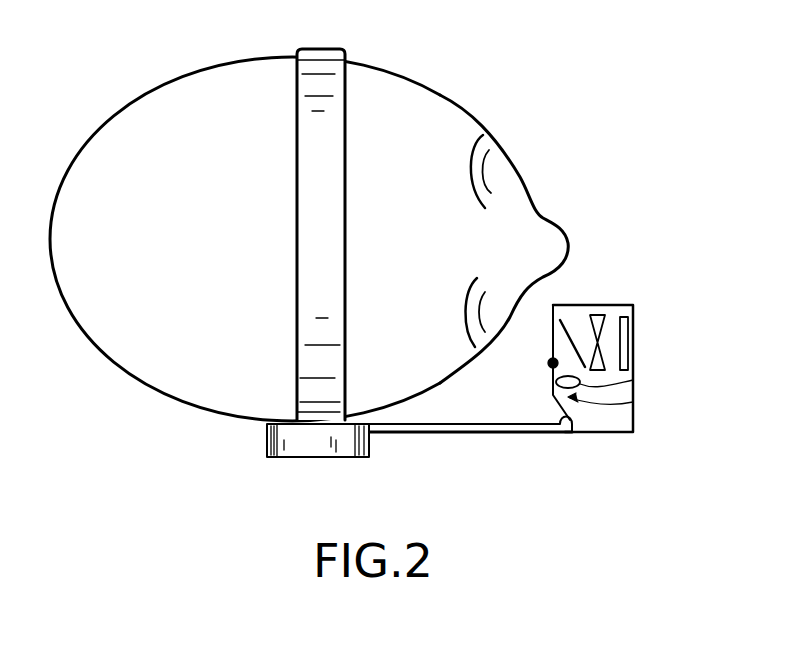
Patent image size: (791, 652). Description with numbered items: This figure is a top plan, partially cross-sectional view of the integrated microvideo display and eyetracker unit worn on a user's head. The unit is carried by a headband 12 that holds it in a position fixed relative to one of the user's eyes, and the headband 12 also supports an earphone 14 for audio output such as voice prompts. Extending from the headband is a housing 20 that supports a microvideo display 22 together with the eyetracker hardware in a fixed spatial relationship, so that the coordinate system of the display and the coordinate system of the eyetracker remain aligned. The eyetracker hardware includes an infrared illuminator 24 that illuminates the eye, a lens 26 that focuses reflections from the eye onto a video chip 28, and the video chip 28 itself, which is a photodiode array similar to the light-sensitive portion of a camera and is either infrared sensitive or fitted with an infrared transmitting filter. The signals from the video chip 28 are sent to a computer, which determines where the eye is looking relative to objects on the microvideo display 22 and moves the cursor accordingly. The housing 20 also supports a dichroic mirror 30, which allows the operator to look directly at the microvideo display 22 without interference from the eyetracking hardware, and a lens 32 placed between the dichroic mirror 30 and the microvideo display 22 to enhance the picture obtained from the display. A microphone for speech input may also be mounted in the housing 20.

The headband 12 is at (306, 176).
The earphone 14 is at (270, 445).
The housing 20 is at (612, 435).
The microvideo display 22 is at (638, 335).
The infrared illuminator 24 is at (550, 366).
The lens 26 is at (633, 380).
The video chip 28 is at (633, 400).
The dichroic mirror 30 is at (574, 326).
The lens 32 is at (606, 309).